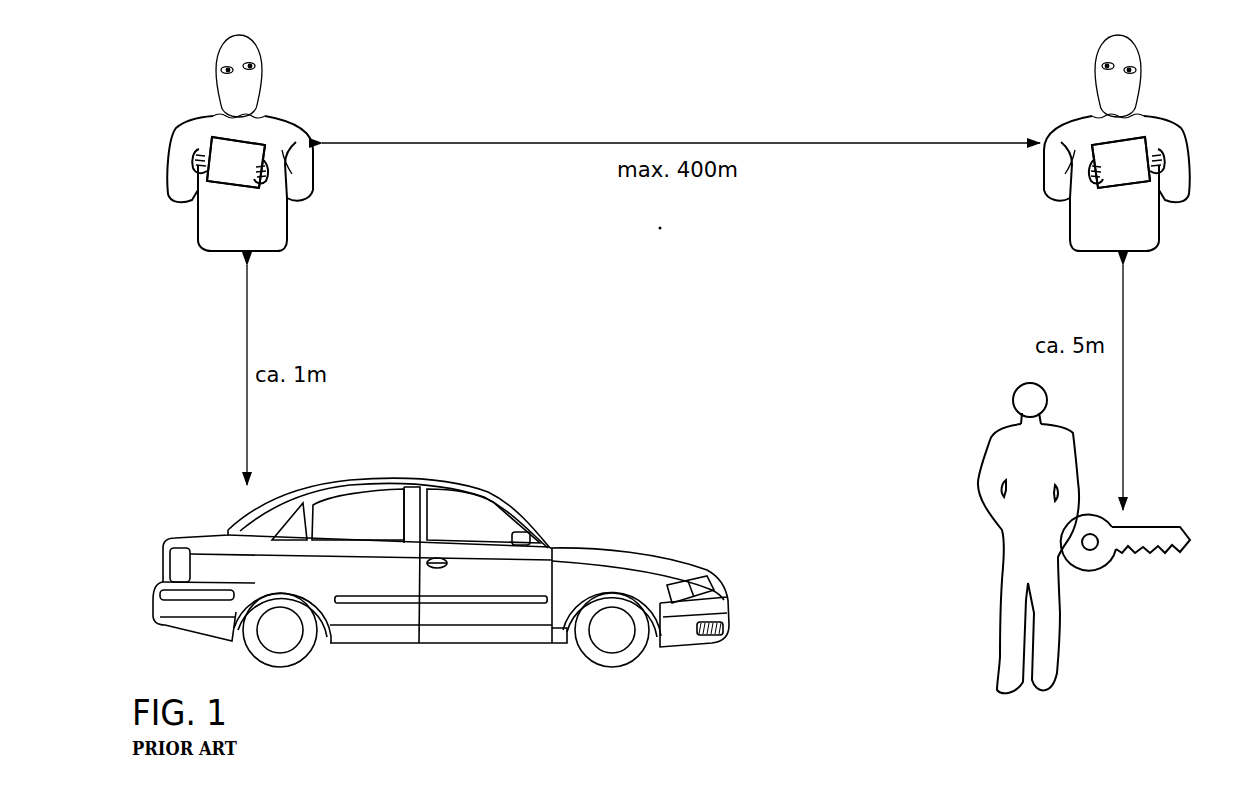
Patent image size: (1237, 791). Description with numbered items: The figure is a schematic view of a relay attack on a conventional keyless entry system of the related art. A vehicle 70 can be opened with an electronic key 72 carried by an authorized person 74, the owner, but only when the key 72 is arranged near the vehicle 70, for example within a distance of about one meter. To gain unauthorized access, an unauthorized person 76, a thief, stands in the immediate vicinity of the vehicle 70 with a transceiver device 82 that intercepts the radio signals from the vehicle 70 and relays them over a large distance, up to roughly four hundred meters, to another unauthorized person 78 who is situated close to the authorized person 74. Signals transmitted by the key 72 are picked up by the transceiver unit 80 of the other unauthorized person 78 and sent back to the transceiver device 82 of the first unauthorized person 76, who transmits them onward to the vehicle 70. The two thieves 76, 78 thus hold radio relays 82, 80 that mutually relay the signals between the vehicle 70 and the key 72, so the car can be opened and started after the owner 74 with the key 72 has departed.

The vehicle 70 is at (611, 551).
The electronic key 72 is at (1108, 560).
The authorized person 74 is at (1011, 565).
The unauthorized person 76 is at (280, 226).
The other unauthorized person 78 is at (1073, 124).
The transceiver unit 80 is at (1144, 145).
The transceiver device 82 is at (257, 152).